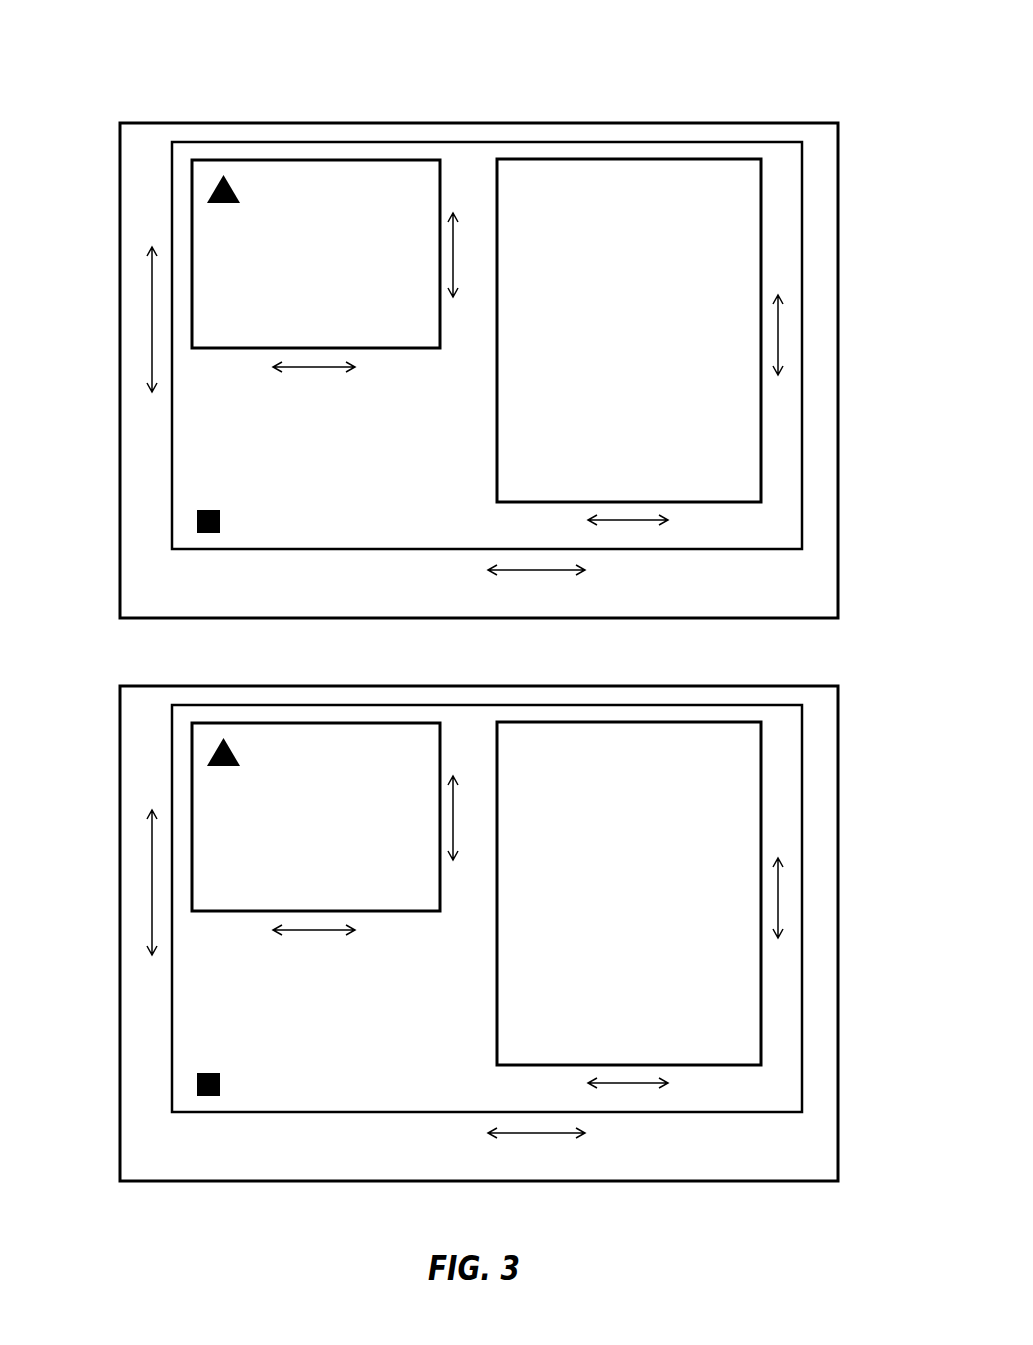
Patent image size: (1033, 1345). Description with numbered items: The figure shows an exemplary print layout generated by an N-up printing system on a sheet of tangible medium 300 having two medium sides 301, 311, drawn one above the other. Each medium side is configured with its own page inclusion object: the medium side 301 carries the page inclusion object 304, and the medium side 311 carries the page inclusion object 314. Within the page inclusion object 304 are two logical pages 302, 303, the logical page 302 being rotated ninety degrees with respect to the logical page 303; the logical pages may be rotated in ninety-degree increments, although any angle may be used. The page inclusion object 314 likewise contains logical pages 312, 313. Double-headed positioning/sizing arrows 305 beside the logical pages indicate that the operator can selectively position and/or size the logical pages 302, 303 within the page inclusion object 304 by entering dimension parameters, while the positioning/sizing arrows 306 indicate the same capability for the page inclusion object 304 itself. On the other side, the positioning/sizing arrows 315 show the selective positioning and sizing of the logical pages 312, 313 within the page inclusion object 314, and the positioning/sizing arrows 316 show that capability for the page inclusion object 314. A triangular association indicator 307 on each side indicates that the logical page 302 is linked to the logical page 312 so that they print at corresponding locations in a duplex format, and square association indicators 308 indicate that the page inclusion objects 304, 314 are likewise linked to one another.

The sheet of tangible medium 300 is at (835, 49).
The medium side 301 is at (370, 597).
The logical page 302 is at (377, 264).
The logical page 303 is at (650, 374).
The page inclusion object 304 is at (299, 522).
The positioning/sizing arrows 305 is at (455, 240).
The positioning/sizing arrows 306 is at (152, 293).
The association indicator 307 is at (236, 190).
The association indicators 308 is at (197, 518).
The medium side 311 is at (370, 1160).
The logical page 312 is at (377, 827).
The logical page 313 is at (650, 937).
The page inclusion object 314 is at (299, 1085).
The positioning/sizing arrows 315 is at (455, 800).
The positioning/sizing arrows 316 is at (152, 905).